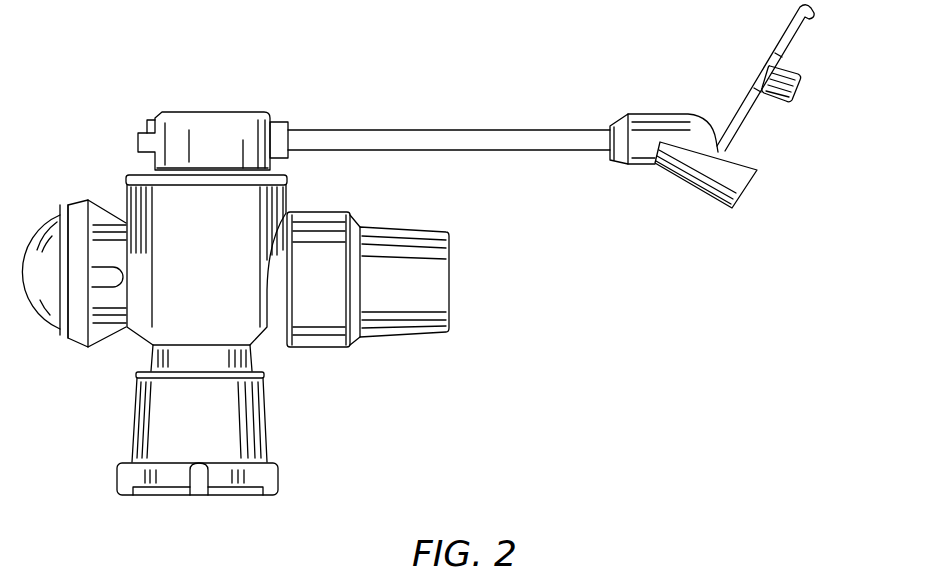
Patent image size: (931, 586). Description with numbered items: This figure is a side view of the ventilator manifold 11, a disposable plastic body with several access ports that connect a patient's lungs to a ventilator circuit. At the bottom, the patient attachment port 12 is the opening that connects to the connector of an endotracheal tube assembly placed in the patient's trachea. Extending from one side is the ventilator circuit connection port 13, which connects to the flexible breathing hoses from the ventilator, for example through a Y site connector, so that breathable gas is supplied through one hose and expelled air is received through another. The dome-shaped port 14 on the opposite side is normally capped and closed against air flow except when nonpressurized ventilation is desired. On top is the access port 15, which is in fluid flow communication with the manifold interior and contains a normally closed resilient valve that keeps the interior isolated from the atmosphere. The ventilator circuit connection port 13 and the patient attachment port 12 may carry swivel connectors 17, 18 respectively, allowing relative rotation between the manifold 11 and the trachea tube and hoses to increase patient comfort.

The ventilator manifold 11 is at (473, 292).
The patient attachment port 12 is at (273, 420).
The ventilator circuit connection port 13 is at (402, 261).
The port 14 is at (105, 342).
The access port 15 is at (138, 101).
The swivel connector 17 is at (408, 297).
The swivel connector 18 is at (270, 482).